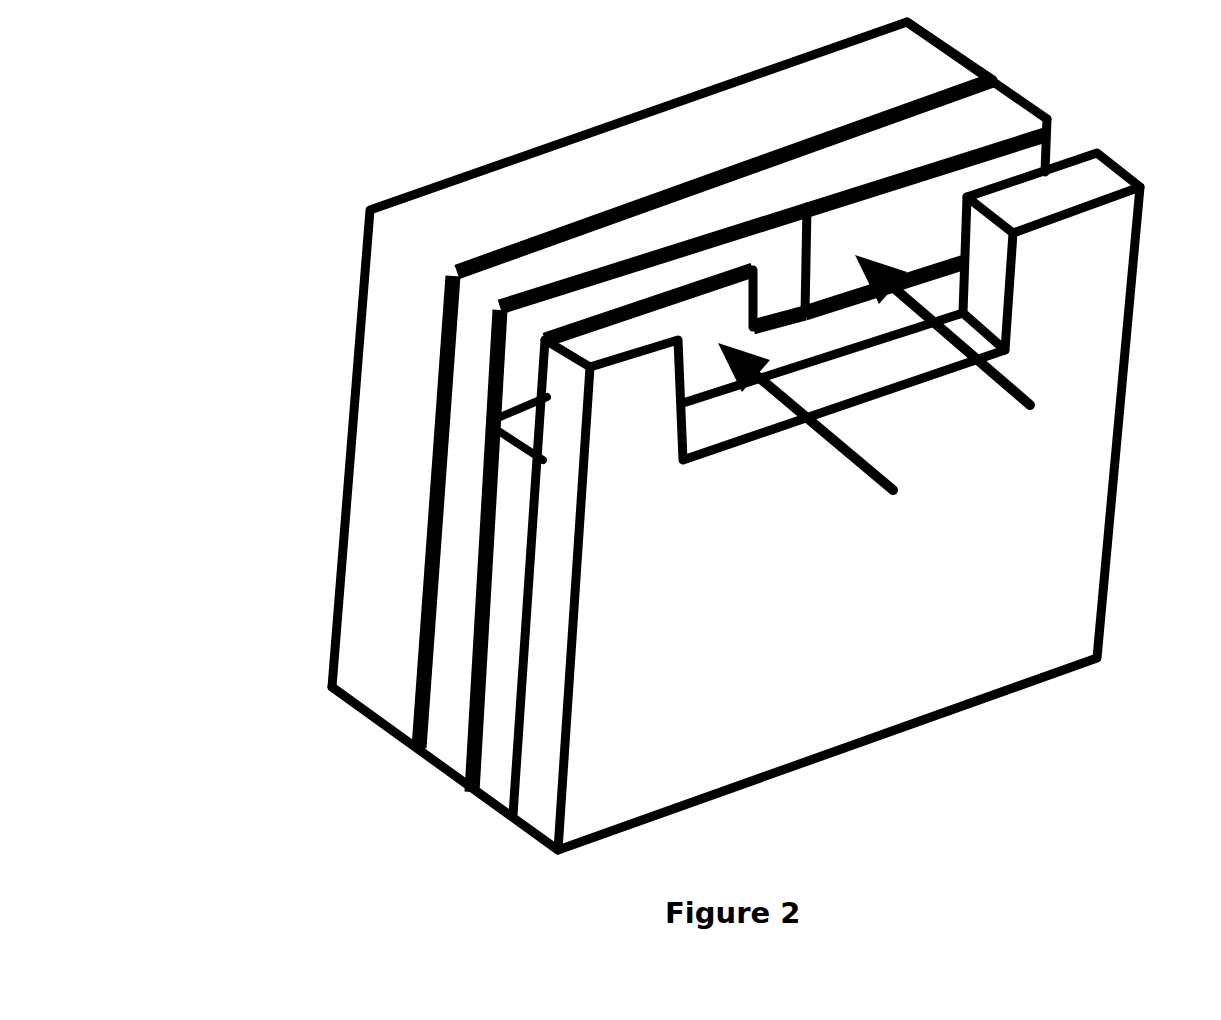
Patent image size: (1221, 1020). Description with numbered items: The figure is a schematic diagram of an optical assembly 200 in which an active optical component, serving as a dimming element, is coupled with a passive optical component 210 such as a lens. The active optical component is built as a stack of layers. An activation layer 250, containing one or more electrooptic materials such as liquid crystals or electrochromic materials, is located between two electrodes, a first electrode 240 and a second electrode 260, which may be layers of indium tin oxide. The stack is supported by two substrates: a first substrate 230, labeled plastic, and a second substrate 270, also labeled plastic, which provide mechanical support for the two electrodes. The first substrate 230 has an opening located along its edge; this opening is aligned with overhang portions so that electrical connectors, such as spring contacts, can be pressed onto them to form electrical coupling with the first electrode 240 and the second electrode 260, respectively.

The optical assembly 200 is at (250, 100).
The passive optical component 210 is at (653, 140).
The first substrate 230 is at (475, 387).
The first electrode 240 is at (1030, 157).
The activation layer 250 is at (515, 573).
The second electrode 260 is at (697, 368).
The second substrate 270 is at (958, 603).